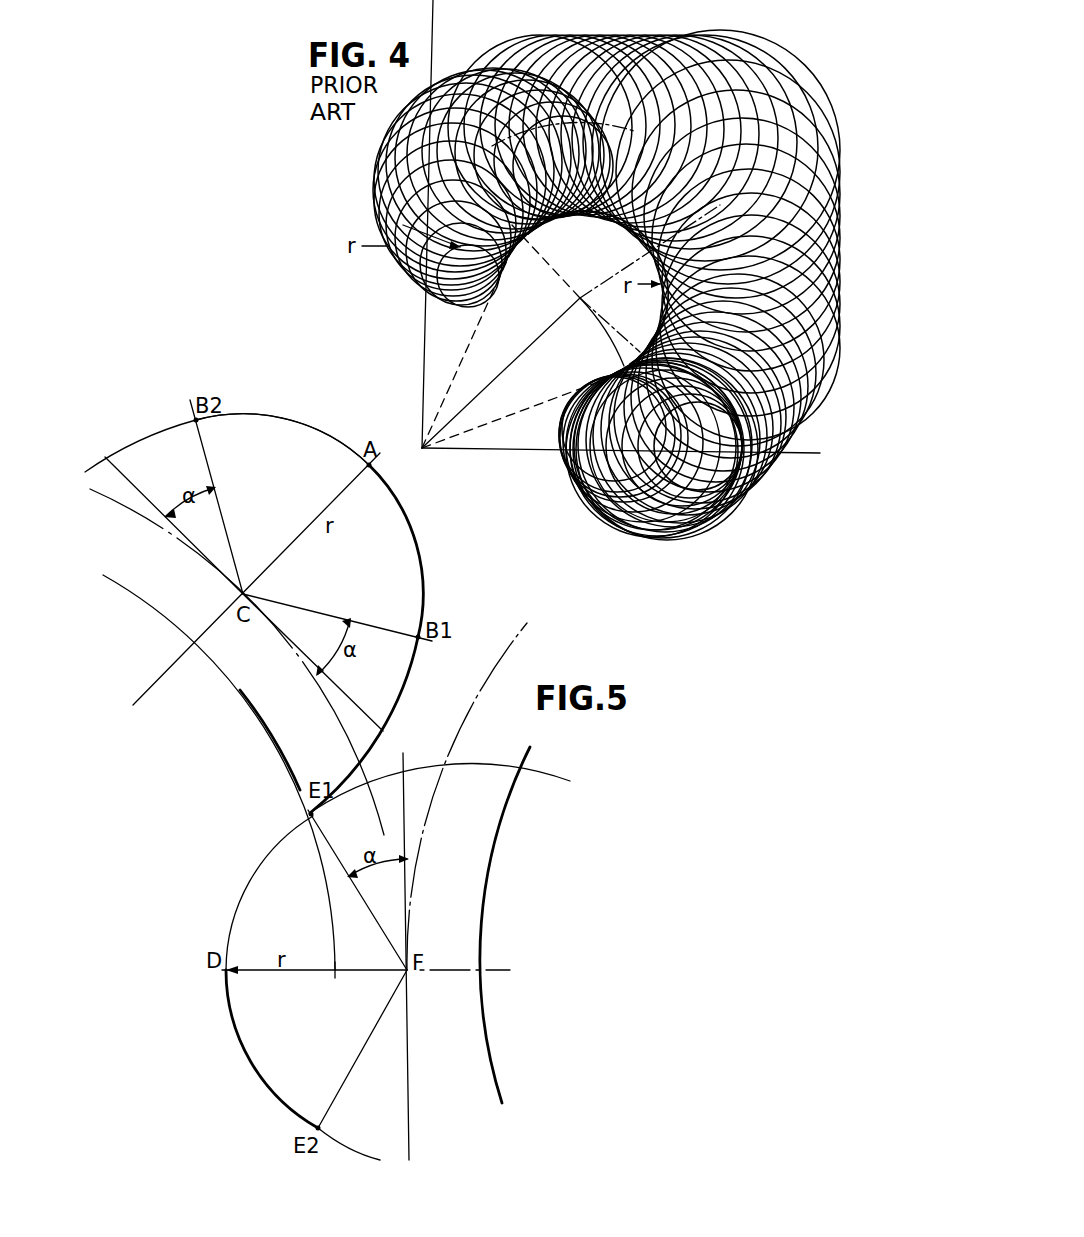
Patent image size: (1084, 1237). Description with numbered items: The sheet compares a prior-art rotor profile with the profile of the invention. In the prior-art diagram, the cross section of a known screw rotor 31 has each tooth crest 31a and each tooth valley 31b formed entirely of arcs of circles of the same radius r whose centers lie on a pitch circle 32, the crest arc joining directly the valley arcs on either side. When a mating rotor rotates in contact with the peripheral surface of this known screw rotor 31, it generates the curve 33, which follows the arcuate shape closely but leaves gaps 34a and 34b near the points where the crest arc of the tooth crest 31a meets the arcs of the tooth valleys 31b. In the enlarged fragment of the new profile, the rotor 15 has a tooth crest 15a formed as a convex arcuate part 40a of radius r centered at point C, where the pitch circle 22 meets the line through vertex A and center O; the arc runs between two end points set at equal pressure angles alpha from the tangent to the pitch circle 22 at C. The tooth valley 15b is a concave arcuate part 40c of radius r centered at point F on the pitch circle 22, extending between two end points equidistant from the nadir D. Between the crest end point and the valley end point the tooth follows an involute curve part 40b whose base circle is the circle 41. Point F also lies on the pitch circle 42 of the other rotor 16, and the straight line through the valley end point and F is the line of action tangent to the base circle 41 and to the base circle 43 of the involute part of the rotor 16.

In FIG. 4, the known screw rotor 31 is at (640, 228).
In FIG. 4, the tooth crest 31a is at (620, 231).
In FIG. 4, the tooth valley 31b is at (427, 223).
In FIG. 4, the pitch circle 32 is at (590, 316).
In FIG. 4, the curve 33 is at (540, 222).
In FIG. 4, the gap 34a is at (637, 346).
In FIG. 4, the gap 34b is at (530, 250).
In FIG. 5, the rotor 15 is at (430, 561).
In FIG. 5, the tooth crest 15a is at (392, 518).
In FIG. 5, the tooth valley 15b is at (222, 1007).
In FIG. 5, the other rotor 16 is at (470, 765).
In FIG. 5, the pitch circle 22 is at (330, 708).
In FIG. 5, the convex arcuate part 40a is at (343, 445).
In FIG. 5, the involute curve part 40b is at (408, 683).
In FIG. 5, the concave arcuate part 40c is at (247, 880).
In FIG. 5, the base circle 41 is at (215, 673).
In FIG. 5, the pitch circle 42 is at (427, 827).
In FIG. 5, the base circle 43 is at (500, 820).